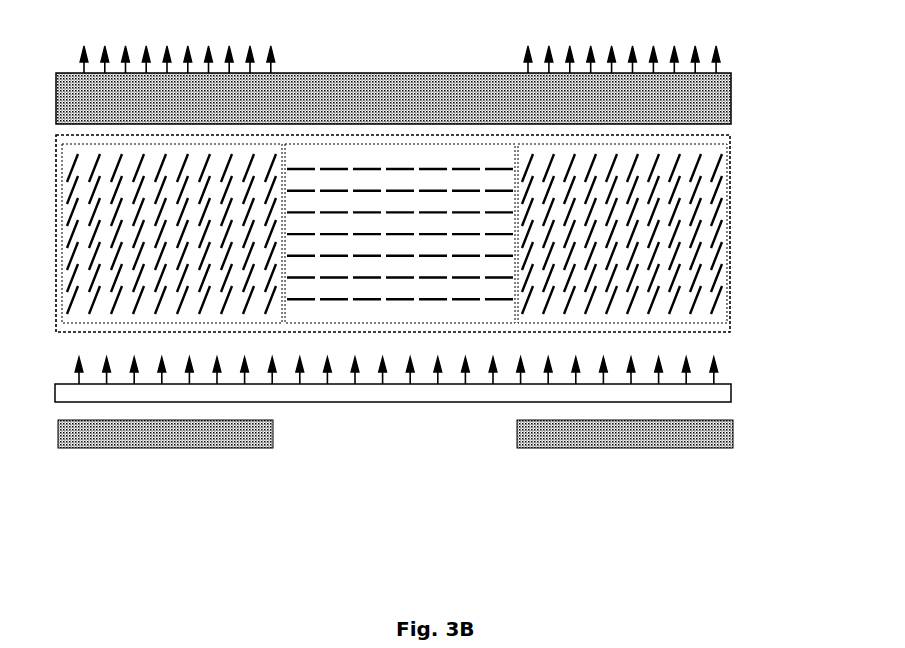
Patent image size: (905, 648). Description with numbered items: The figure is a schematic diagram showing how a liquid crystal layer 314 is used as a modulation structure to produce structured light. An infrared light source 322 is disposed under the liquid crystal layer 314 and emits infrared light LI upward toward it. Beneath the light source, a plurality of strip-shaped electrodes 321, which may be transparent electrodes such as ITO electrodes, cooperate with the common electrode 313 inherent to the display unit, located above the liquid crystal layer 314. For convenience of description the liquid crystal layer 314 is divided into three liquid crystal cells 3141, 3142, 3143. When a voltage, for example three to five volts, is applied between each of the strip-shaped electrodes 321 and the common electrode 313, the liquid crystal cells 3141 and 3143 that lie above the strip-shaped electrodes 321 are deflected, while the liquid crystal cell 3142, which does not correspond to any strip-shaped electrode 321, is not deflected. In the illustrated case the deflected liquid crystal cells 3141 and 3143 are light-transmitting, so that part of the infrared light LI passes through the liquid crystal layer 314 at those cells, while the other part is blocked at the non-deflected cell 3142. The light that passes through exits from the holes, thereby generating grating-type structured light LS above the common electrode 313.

The common electrode 313 is at (732, 92).
The liquid crystal layer 314 is at (430, 250).
The liquid crystal cell 3141 is at (110, 327).
The liquid crystal cell 3142 is at (342, 325).
The liquid crystal cell 3143 is at (635, 325).
The infrared light source 322 is at (730, 384).
The strip-shaped electrodes 321 is at (110, 446).
The grating-type structured light LS is at (690, 43).
The infrared light LI is at (677, 370).